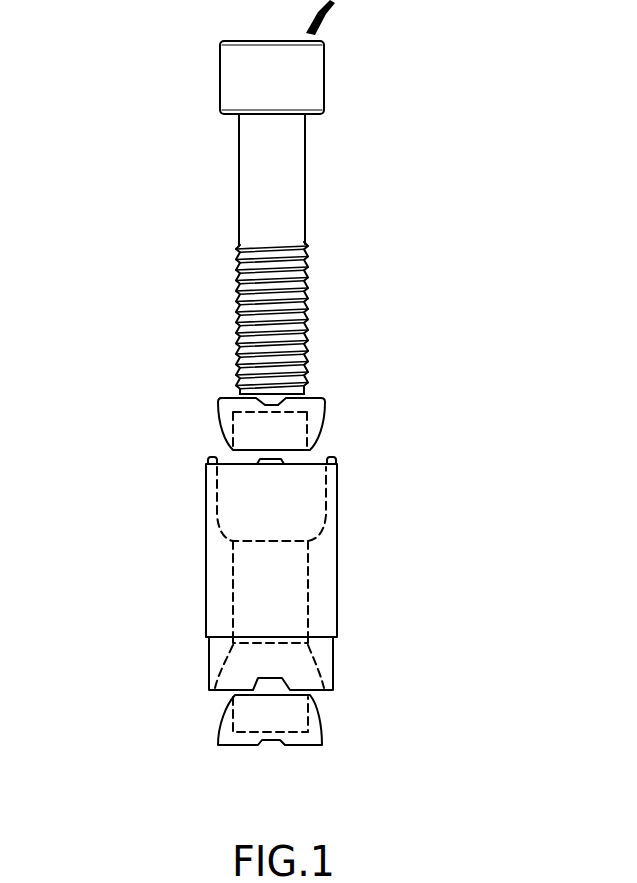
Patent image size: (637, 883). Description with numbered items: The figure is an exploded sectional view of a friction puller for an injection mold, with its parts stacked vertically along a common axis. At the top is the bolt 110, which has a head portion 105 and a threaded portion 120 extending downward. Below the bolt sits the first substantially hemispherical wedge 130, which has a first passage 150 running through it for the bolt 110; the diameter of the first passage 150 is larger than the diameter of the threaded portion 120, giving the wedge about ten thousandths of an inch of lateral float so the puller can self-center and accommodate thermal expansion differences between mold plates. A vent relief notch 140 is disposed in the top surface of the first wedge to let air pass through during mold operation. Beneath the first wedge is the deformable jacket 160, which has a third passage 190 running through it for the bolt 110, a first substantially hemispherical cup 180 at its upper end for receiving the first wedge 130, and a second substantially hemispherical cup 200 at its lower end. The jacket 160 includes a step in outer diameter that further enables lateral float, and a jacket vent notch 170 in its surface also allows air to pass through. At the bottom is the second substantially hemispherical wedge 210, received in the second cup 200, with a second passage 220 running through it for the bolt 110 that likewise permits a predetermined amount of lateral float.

The head portion 105 is at (313, 82).
The bolt 110 is at (220, 58).
The threaded portion 120 is at (240, 268).
The first substantially hemispherical wedge 130 is at (218, 407).
The vent relief notch 140 is at (272, 400).
The first passage 150 is at (310, 437).
The deformable jacket 160 is at (205, 552).
The jacket vent notch 170 is at (284, 678).
The first substantially hemispherical cup 180 is at (335, 530).
The third passage 190 is at (307, 562).
The second substantially hemispherical cup 200 is at (333, 645).
The second substantially hemispherical wedge 210 is at (307, 717).
The second passage 220 is at (316, 749).